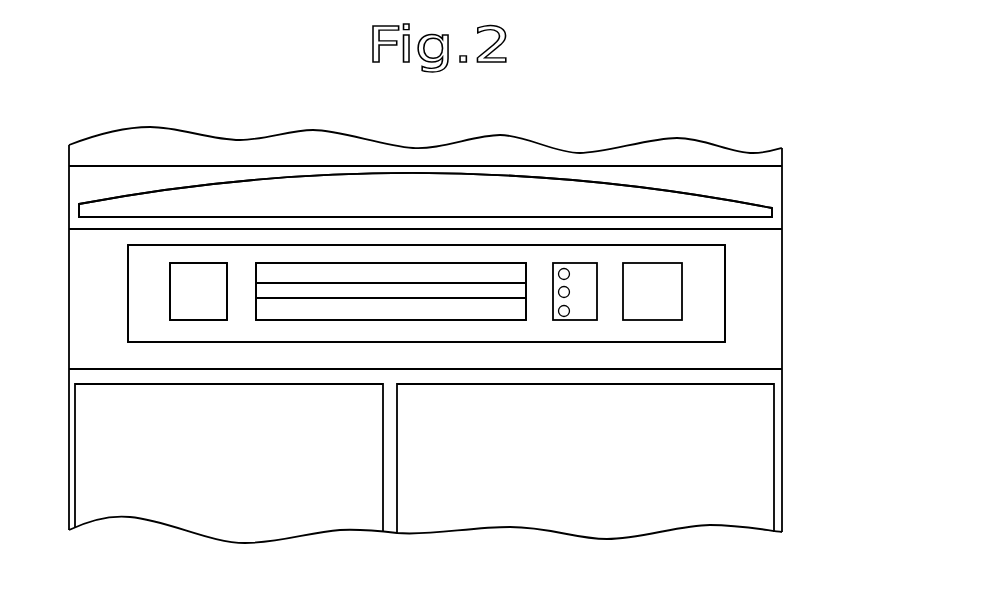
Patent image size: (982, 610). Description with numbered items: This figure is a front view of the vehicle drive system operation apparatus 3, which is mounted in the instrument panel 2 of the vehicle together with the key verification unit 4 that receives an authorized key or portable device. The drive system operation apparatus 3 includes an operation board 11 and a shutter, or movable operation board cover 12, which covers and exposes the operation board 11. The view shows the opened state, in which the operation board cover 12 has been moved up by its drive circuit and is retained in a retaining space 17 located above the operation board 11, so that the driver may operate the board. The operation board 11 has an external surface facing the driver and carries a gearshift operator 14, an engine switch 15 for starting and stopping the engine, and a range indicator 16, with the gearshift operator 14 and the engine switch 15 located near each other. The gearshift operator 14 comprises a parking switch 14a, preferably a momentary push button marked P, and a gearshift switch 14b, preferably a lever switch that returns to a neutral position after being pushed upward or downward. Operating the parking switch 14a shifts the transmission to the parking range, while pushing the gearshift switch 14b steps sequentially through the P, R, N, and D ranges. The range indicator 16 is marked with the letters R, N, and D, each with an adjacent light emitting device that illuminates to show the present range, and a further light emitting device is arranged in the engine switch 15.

The instrument panel 2 is at (588, 151).
The vehicle drive system operation apparatus 3 is at (832, 185).
The key verification unit 4 is at (340, 516).
The operation board 11 is at (710, 302).
The operation board cover 12 is at (772, 209).
The gearshift operator 14 is at (306, 433).
The parking switch 14a is at (208, 310).
The gearshift switch 14b is at (302, 308).
The engine switch 15 is at (653, 313).
The range indicator 16 is at (573, 316).
The retaining space 17 is at (206, 170).